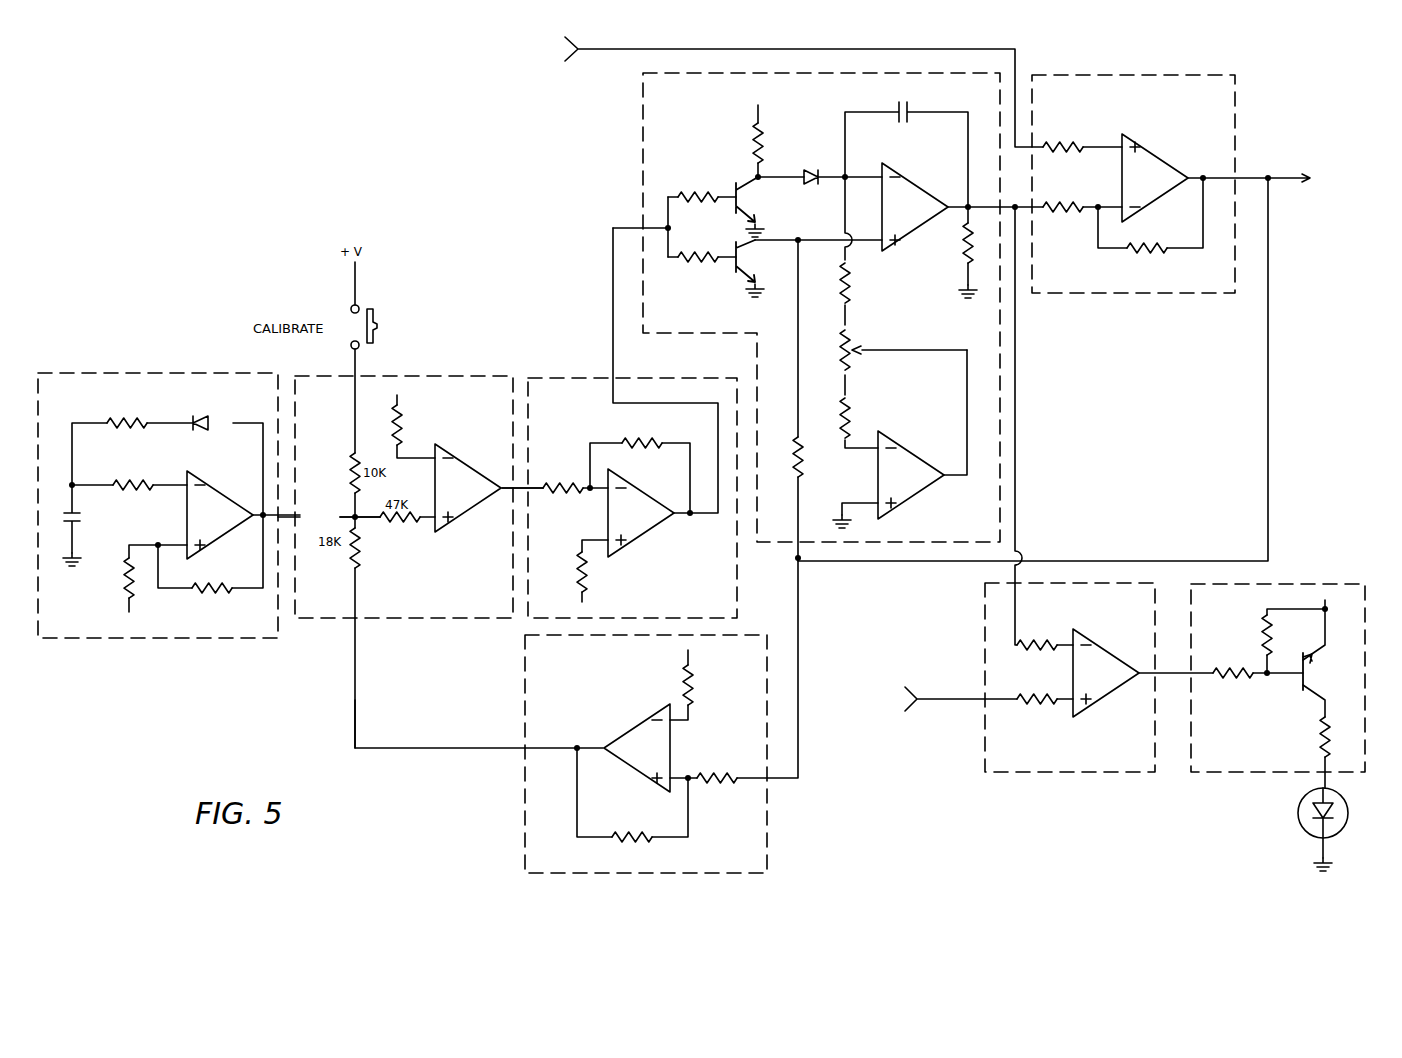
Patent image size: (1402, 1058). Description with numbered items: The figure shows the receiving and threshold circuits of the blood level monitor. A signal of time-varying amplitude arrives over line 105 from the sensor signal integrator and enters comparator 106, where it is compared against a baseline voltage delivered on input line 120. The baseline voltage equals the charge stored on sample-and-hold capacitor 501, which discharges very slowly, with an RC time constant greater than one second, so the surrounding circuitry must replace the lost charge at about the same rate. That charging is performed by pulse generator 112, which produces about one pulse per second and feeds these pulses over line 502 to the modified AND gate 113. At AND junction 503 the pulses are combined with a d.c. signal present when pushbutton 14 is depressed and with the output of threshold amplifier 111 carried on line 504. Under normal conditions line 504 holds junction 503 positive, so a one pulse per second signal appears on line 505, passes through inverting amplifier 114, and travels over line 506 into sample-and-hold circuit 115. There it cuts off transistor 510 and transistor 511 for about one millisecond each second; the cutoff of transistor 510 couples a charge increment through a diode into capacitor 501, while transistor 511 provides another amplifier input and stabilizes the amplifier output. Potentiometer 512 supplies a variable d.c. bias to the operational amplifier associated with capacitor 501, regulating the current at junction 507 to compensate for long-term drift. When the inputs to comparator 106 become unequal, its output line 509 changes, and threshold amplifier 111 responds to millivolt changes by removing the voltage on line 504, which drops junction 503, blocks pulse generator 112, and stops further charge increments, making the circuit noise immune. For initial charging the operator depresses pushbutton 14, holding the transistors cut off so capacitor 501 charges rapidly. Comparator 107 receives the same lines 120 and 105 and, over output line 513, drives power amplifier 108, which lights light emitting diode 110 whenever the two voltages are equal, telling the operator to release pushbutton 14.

The pushbutton 14 is at (380, 300).
The line 105 is at (678, 49).
The comparator 106 is at (1152, 293).
The comparator 107 is at (985, 598).
The power amplifier 108 is at (1270, 584).
The light emitting diode 110 is at (1298, 813).
The threshold amplifier 111 is at (768, 830).
The pulse generator 112 is at (140, 373).
The modified AND gate 113 is at (462, 376).
The inverting amplifier 114 is at (548, 378).
The sample-and-hold circuit 115 is at (807, 317).
The input line 120 is at (1005, 207).
The sample-and-hold capacitor 501 is at (912, 108).
The line 502 is at (284, 517).
The AND junction 503 is at (358, 522).
The line 504 is at (353, 672).
The line 505 is at (515, 488).
The line 506 is at (613, 299).
The junction 507 is at (848, 175).
The output line 509 is at (1247, 177).
The transistor 510 is at (755, 201).
The transistor 511 is at (741, 275).
The potentiometer 512 is at (860, 340).
The output line 513 is at (1163, 673).